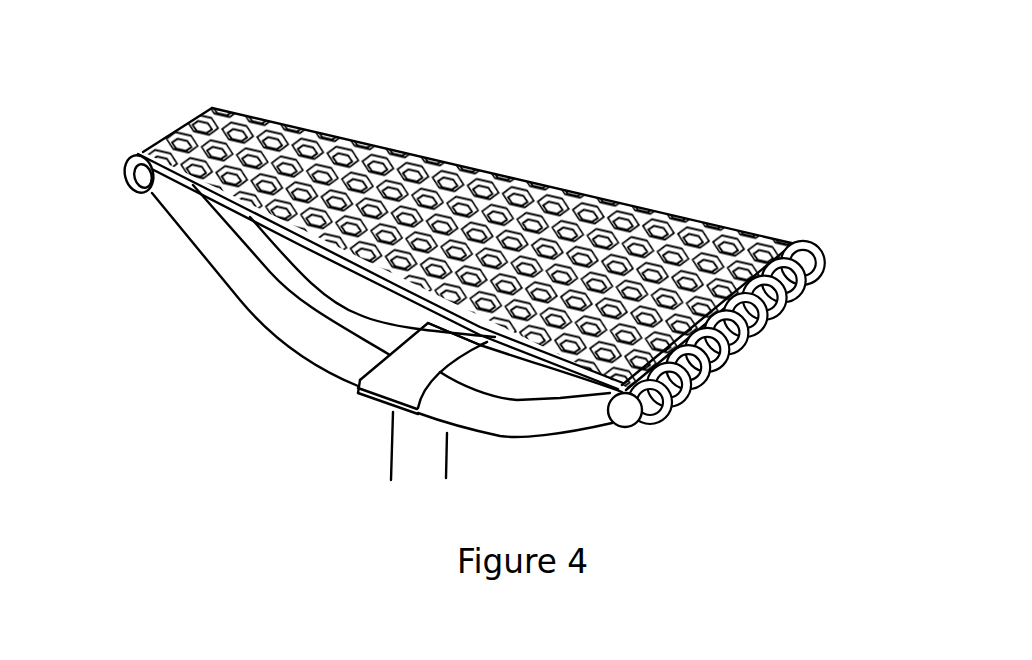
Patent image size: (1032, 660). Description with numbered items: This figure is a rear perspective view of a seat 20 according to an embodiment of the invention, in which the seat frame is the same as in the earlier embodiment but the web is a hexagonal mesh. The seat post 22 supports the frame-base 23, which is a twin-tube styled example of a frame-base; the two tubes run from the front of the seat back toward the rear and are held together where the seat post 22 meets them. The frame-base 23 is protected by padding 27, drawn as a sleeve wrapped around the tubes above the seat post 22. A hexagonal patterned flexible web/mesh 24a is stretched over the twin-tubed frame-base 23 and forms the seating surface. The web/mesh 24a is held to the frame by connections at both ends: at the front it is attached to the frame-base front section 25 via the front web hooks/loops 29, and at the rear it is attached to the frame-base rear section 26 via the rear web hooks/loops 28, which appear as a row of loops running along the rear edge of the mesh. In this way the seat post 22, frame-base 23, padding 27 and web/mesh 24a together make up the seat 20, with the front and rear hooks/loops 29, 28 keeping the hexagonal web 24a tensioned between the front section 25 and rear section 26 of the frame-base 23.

The seat 20 is at (547, 437).
The seat post 22 is at (393, 443).
The frame-base 23 is at (228, 275).
The hexagonal patterned flexible web/mesh 24a is at (505, 172).
The frame-base front section 25 is at (170, 133).
The frame-base rear section 26 is at (787, 328).
The padding 27 is at (359, 388).
The rear web hooks/loops 28 is at (687, 408).
The front web hooks/loops 29 is at (123, 172).